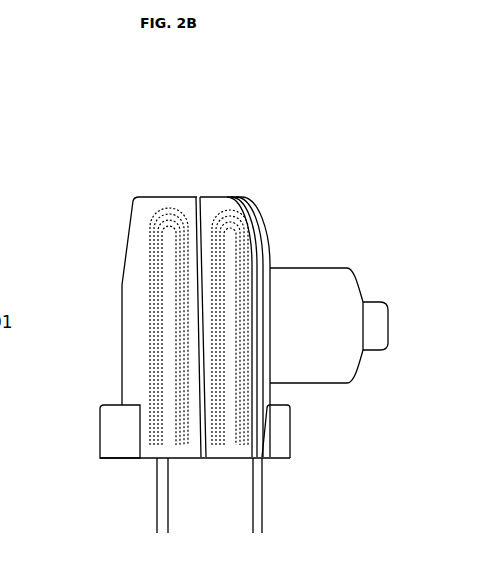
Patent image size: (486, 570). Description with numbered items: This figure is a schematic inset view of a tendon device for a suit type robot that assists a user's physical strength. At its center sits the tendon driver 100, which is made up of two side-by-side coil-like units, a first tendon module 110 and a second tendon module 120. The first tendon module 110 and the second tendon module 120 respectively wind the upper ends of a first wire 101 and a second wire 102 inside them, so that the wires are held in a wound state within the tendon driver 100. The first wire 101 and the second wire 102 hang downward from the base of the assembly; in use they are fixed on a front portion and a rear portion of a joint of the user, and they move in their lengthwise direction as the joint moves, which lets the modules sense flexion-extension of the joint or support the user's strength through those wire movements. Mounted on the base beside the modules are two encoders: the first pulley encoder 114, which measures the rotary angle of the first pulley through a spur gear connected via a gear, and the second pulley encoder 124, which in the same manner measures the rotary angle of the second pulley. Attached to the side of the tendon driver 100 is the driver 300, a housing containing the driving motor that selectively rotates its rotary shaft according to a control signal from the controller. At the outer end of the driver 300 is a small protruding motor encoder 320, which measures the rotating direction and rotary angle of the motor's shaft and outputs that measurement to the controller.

The tendon driver 100 is at (219, 100).
The first tendon module 110 is at (153, 185).
The second tendon module 120 is at (223, 185).
The driver 300 is at (321, 252).
The motor encoder 320 is at (380, 326).
The second pulley encoder 124 is at (118, 440).
The first pulley encoder 114 is at (277, 429).
The second wire 102 is at (160, 505).
The first wire 101 is at (265, 500).